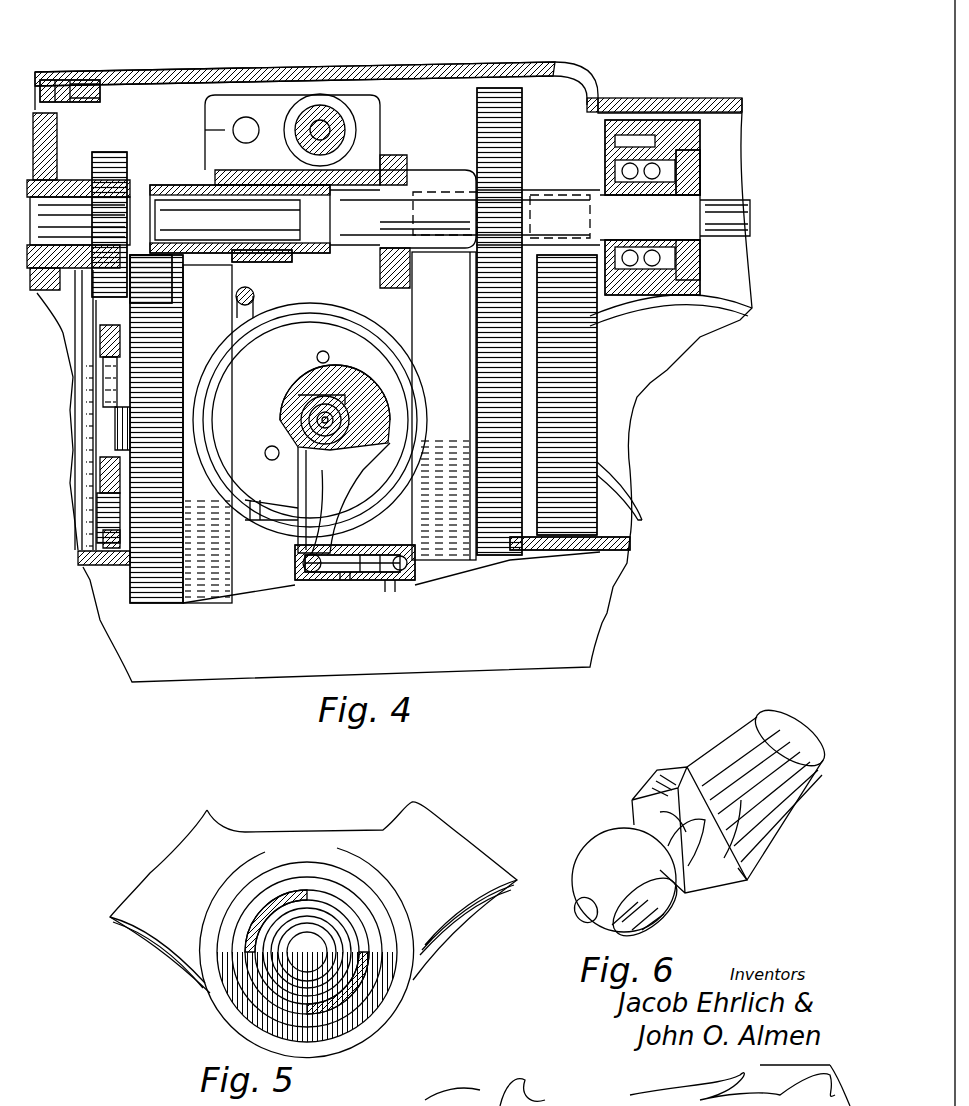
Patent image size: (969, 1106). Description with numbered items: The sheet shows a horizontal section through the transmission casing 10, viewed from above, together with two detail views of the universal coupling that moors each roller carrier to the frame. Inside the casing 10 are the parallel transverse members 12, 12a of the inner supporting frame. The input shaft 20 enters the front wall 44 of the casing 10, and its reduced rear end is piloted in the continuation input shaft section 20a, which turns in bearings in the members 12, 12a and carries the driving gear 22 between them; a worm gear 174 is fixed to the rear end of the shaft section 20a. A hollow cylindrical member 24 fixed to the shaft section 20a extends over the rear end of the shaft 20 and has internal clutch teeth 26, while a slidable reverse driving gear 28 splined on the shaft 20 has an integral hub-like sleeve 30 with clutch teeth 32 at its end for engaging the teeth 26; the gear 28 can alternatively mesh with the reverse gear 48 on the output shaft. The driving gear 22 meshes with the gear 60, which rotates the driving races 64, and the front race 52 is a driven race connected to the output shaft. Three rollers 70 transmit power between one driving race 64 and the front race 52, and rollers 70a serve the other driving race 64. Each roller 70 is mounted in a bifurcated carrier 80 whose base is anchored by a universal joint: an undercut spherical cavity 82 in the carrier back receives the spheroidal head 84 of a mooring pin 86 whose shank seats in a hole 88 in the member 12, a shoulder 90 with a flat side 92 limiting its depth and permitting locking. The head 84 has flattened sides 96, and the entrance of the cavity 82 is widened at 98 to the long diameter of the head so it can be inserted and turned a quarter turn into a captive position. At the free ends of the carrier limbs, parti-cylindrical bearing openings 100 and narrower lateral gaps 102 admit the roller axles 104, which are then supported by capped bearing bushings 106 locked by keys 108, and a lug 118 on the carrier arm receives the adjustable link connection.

In FIG. 4, the transmission casing 10 is at (412, 66).
In FIG. 4, the transverse member 12 is at (392, 582).
In FIG. 4, the transverse member 12a is at (607, 287).
In FIG. 4, the input shaft 20 is at (38, 296).
In FIG. 4, the continuation input shaft section 20a is at (392, 192).
In FIG. 4, the driving gear 22 is at (505, 100).
In FIG. 4, the hollow cylindrical member 24 is at (284, 272).
In FIG. 4, the internal clutch teeth 26 is at (240, 266).
In FIG. 4, the reverse driving gear 28 is at (112, 155).
In FIG. 4, the hub-like sleeve 30 is at (163, 185).
In FIG. 4, the clutch teeth 32 is at (294, 248).
In FIG. 4, the front wall 44 is at (53, 80).
In FIG. 4, the reverse gear 48 is at (128, 575).
In FIG. 4, the front race 52 is at (160, 580).
In FIG. 4, the gear 60 is at (522, 525).
In FIG. 4, the driving race 64 is at (578, 422).
In FIG. 4, the roller 70 is at (400, 358).
In FIG. 4, the roller 70a is at (722, 294).
In FIG. 4, the carrier 80 is at (370, 470).
In FIG. 5, the carrier 80 is at (445, 922).
In FIG. 4, the spherical cavity 82 is at (318, 578).
In FIG. 5, the spherical cavity 82 is at (312, 912).
In FIG. 4, the spheroidal head 84 is at (325, 574).
In FIG. 6, the spheroidal head 84 is at (595, 868).
In FIG. 4, the mooring pin 86 is at (372, 574).
In FIG. 6, the mooring pin 86 is at (712, 760).
In FIG. 4, the hole 88 is at (412, 568).
In FIG. 4, the shoulder 90 is at (348, 582).
In FIG. 6, the shoulder 90 is at (745, 875).
In FIG. 6, the flat side 92 is at (660, 782).
In FIG. 6, the flattened side 96 is at (650, 915).
In FIG. 5, the widened entrance orifice 98 is at (367, 965).
In FIG. 4, the bearing opening 100 is at (355, 424).
In FIG. 4, the lateral gap 102 is at (305, 418).
In FIG. 4, the axle 104 is at (318, 437).
In FIG. 4, the capped bearing bushing 106 is at (312, 425).
In FIG. 4, the key 108 is at (296, 398).
In FIG. 4, the lug 118 is at (298, 505).
In FIG. 4, the worm gear 174 is at (698, 172).